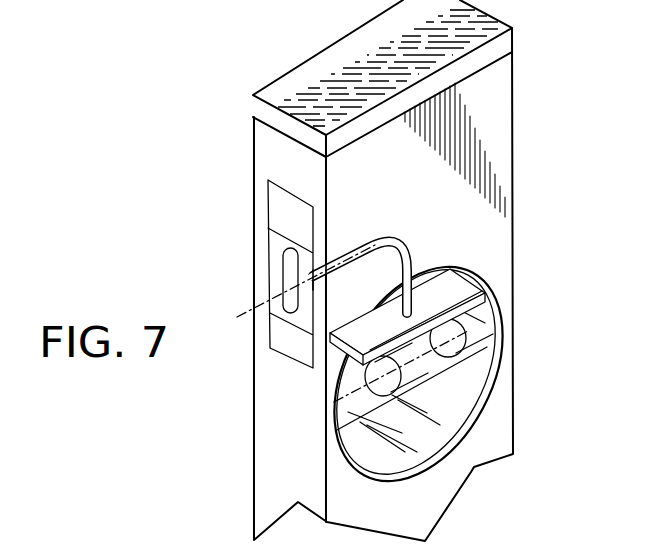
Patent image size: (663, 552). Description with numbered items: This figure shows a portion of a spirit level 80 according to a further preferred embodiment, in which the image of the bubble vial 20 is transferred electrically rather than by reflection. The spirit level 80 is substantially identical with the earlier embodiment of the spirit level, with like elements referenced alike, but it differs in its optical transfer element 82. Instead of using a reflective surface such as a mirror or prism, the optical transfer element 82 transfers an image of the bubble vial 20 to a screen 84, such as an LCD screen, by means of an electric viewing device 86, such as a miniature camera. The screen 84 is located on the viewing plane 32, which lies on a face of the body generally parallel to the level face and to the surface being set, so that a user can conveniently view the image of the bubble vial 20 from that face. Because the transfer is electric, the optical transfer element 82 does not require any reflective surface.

The spirit level 80 is at (218, 173).
The viewing plane 32 is at (277, 211).
The screen 84 is at (277, 277).
The optical transfer element 82 is at (386, 226).
The electric viewing device 86 is at (445, 280).
The bubble vial 20 is at (420, 368).